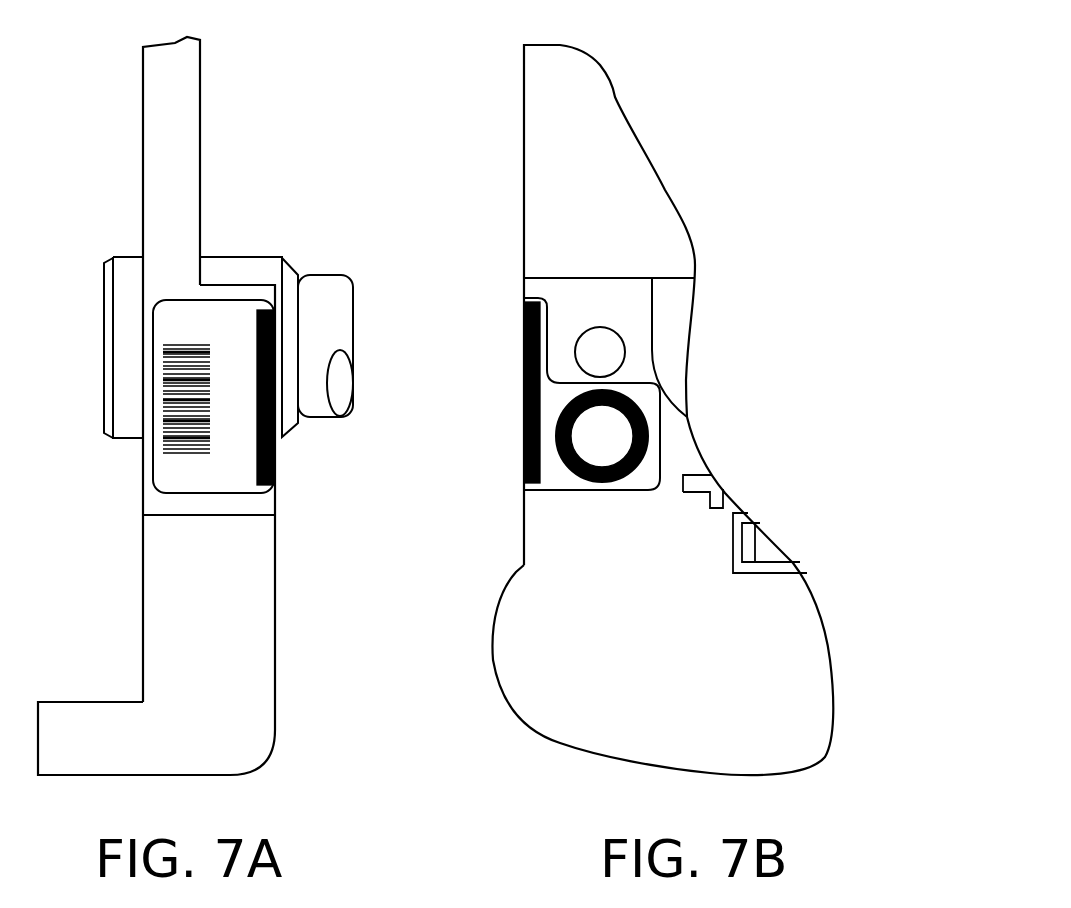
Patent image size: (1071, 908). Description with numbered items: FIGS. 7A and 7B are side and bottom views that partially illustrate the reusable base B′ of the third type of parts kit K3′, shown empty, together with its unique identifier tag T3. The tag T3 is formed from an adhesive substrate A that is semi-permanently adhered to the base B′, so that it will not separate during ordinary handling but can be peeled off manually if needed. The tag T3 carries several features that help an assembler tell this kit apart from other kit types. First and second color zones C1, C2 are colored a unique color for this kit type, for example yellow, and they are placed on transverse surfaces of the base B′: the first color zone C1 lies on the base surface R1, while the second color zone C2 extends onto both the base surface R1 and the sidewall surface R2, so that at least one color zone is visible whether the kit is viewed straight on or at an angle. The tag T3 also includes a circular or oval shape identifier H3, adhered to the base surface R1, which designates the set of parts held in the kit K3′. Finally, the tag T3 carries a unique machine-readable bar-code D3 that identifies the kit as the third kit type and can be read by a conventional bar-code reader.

In FIG. 7A, the reusable base B′ is at (182, 120).
In FIG. 7B, the reusable base B′ is at (598, 118).
In FIG. 7A, the parts kit K3′ is at (240, 232).
In FIG. 7B, the parts kit K3′ is at (716, 230).
In FIG. 7A, the bar-code D3 is at (165, 331).
In FIG. 7A, the unique identifier tag T3 is at (177, 488).
In FIG. 7B, the unique identifier tag T3 is at (562, 483).
In FIG. 7A, the adhesive substrate A is at (232, 497).
In FIG. 7B, the adhesive substrate A is at (593, 490).
In FIG. 7A, the second color zone C2 is at (248, 483).
In FIG. 7B, the second color zone C2 is at (525, 370).
In FIG. 7A, the sidewall surface R2 is at (248, 692).
In FIG. 7B, the shape identifier H3 is at (653, 402).
In FIG. 7B, the first color zone C1 is at (650, 430).
In FIG. 7B, the base surface R1 is at (523, 697).